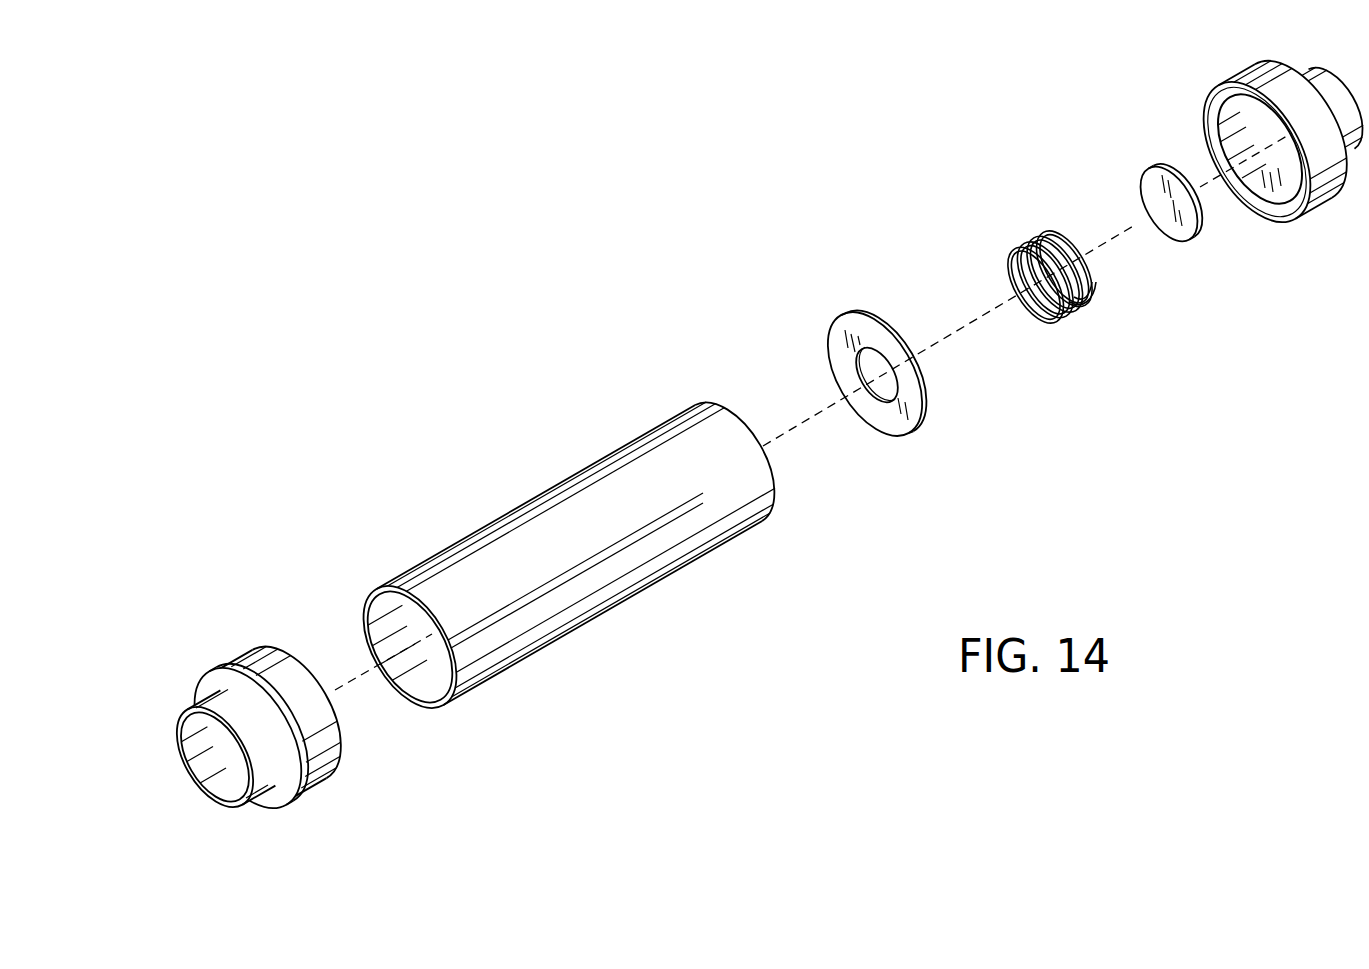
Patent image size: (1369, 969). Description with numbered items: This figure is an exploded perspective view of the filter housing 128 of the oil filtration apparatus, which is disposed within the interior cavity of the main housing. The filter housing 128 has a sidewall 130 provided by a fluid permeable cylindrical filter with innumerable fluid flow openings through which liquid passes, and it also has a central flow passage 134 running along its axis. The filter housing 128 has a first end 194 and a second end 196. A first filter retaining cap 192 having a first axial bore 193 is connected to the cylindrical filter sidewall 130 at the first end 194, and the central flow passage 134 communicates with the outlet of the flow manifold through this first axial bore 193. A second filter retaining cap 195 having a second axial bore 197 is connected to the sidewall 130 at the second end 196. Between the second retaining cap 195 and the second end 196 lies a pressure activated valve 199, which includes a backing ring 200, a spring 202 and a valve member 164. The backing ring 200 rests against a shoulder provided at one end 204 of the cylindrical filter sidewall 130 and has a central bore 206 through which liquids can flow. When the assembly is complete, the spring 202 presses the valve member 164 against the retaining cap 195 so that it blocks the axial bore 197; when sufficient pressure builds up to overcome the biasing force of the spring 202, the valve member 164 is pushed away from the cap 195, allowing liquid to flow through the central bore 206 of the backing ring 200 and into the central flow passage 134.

The filter housing 128 is at (697, 357).
The sidewall 130 is at (600, 580).
The central flow passage 134 is at (417, 670).
The end of cylindrical filter/sidewall 204 is at (772, 477).
The first filter retaining cap 192 is at (220, 732).
The first axial bore 193 is at (223, 762).
The first end 194 is at (182, 715).
The pressure activated valve 199 is at (997, 224).
The backing ring 200 is at (910, 394).
The central bore 206 is at (884, 383).
The spring 202 is at (1072, 305).
The valve member 164 is at (1150, 172).
The second filter retaining cap 195 is at (1265, 145).
The second end 196 is at (1327, 68).
The second axial bore 197 is at (1252, 198).